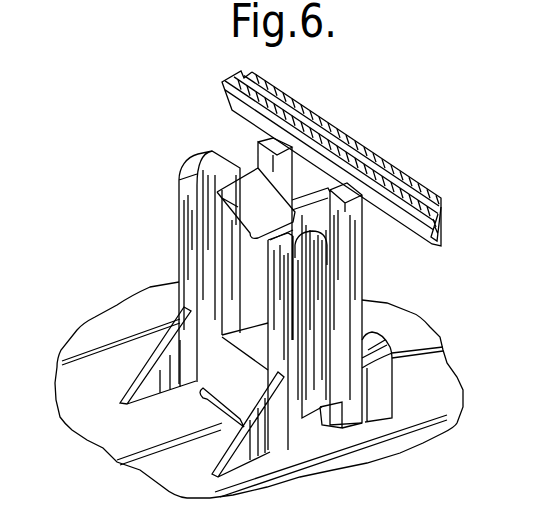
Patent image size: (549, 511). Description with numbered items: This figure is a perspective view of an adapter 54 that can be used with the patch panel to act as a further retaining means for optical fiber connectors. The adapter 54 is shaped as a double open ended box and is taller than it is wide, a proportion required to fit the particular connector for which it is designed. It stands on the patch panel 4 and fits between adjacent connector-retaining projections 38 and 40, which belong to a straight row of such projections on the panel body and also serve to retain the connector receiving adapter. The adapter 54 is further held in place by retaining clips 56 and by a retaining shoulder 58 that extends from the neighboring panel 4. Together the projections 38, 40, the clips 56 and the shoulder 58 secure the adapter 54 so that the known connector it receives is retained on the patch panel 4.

The panel 4 is at (108, 323).
The projection 38 is at (265, 440).
The projection 40 is at (380, 390).
The adapter 54 is at (347, 285).
The retaining clip 56 is at (245, 206).
The retaining shoulder 58 is at (393, 183).